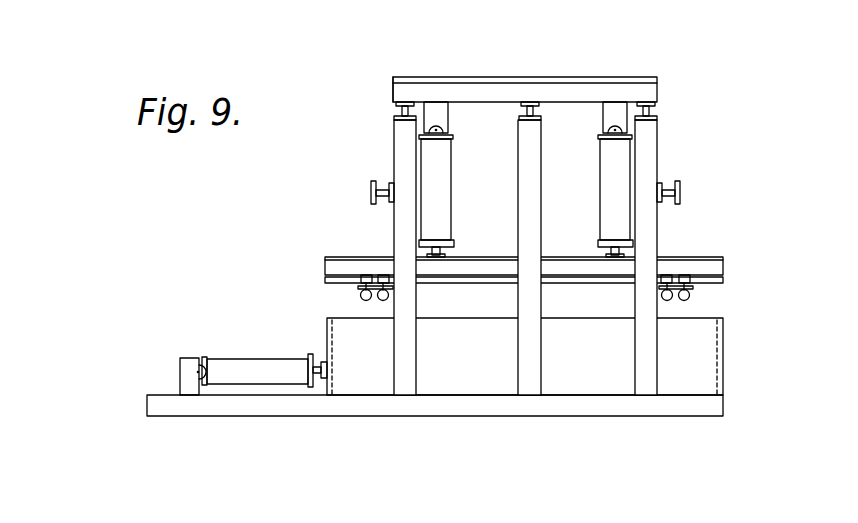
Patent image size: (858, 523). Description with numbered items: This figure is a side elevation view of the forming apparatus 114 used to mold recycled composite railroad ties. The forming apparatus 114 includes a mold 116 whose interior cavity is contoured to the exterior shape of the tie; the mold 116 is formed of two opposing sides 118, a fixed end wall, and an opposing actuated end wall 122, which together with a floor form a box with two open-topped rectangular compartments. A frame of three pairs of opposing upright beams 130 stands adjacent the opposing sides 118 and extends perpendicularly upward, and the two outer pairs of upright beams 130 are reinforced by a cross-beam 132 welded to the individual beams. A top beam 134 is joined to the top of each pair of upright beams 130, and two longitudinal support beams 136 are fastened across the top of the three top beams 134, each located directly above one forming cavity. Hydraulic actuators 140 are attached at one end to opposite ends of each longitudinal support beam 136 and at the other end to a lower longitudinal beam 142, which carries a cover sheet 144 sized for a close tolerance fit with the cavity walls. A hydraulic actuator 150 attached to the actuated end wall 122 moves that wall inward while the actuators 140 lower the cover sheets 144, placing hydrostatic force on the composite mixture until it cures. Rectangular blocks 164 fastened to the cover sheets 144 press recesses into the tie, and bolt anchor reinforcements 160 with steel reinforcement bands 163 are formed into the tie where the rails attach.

The forming apparatus 114 is at (288, 230).
The mold 116 is at (745, 381).
The opposing sides 118 is at (596, 393).
The actuated end wall 122 is at (332, 395).
The upright beams 130 is at (651, 153).
The cross-beam 132 is at (681, 190).
The top beam 134 is at (650, 112).
The longitudinal support beams 136 is at (392, 90).
The hydraulic actuators 140 is at (430, 168).
The lower longitudinal beam 142 is at (724, 262).
The cover sheet 144 is at (724, 280).
The hydraulic actuator 150 is at (230, 368).
The bolt anchor reinforcements 160 is at (347, 307).
The steel reinforcement bands 163 is at (361, 295).
The rectangular blocks 164 is at (360, 287).